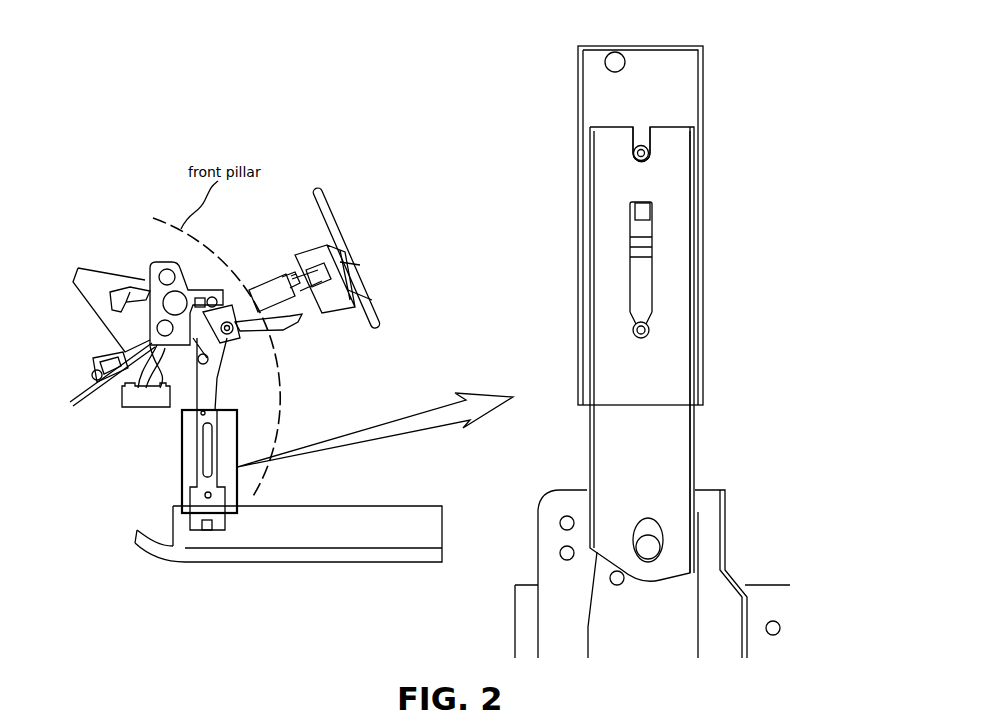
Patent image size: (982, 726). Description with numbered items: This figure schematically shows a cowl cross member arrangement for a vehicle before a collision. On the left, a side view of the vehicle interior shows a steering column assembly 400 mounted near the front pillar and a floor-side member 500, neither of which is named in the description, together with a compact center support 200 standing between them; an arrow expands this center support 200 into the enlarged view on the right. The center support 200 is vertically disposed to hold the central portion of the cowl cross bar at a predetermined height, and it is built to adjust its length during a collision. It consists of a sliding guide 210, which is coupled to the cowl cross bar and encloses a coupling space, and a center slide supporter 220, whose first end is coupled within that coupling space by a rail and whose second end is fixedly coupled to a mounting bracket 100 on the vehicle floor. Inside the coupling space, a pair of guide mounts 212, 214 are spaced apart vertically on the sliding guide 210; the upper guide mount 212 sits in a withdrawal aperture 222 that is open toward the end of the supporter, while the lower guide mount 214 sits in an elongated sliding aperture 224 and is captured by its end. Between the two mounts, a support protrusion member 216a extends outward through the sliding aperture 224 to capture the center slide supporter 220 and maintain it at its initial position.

The mounting bracket 100 is at (723, 587).
The center support 200 is at (707, 200).
The sliding guide 210 is at (703, 83).
The guide mount 212 is at (650, 153).
The guide mount 214 is at (648, 327).
The support protrusion member 216a is at (645, 213).
The center slide supporter 220 is at (667, 463).
The withdrawal aperture 222 is at (642, 140).
The sliding aperture 224 is at (643, 288).
The steering column 400 is at (247, 292).
The floor panel 500 is at (353, 523).